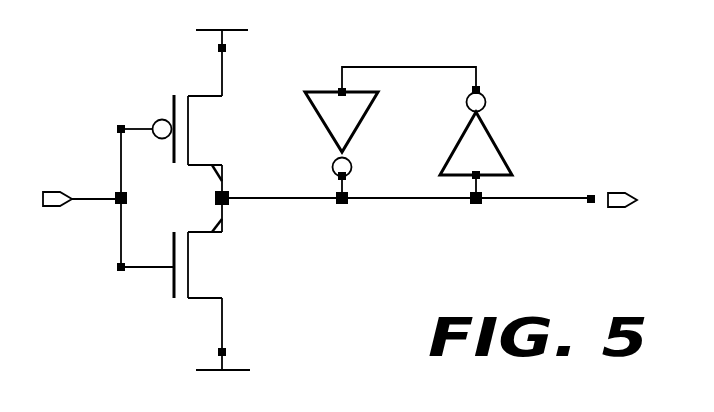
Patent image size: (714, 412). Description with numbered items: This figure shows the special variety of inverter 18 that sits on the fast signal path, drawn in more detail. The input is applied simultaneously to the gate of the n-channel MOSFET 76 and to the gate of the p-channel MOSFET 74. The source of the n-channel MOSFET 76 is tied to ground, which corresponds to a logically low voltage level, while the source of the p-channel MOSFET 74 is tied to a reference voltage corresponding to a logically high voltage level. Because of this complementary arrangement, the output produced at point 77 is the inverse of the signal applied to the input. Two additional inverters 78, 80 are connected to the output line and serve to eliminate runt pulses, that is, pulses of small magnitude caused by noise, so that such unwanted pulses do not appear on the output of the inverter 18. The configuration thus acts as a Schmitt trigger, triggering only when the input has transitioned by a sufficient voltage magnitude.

The inverter 18 is at (297, 280).
The p-channel MOSFET 74 is at (190, 133).
The n-channel MOSFET 76 is at (190, 265).
The output point 77 is at (226, 206).
The inverter 78 is at (495, 133).
The inverter 80 is at (330, 132).